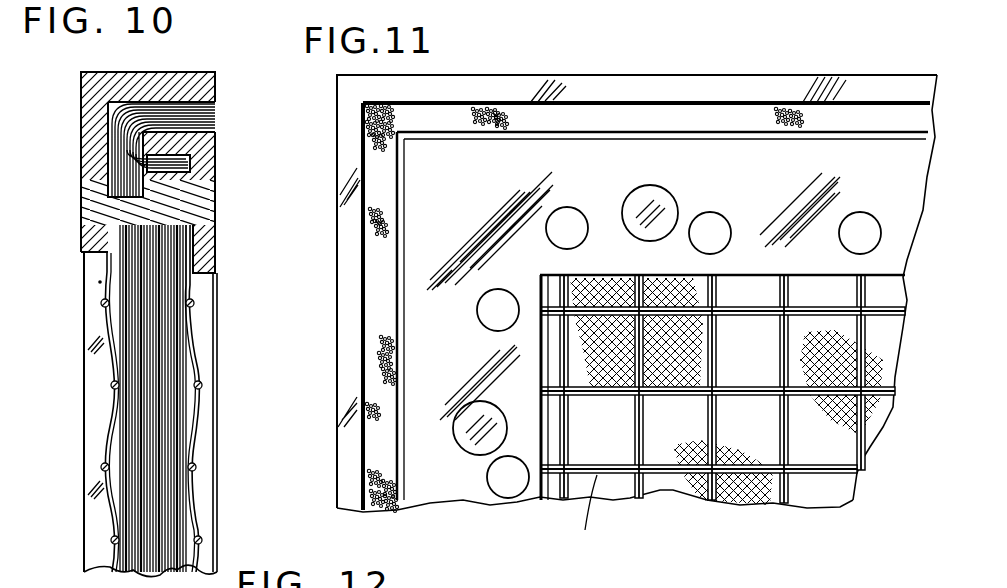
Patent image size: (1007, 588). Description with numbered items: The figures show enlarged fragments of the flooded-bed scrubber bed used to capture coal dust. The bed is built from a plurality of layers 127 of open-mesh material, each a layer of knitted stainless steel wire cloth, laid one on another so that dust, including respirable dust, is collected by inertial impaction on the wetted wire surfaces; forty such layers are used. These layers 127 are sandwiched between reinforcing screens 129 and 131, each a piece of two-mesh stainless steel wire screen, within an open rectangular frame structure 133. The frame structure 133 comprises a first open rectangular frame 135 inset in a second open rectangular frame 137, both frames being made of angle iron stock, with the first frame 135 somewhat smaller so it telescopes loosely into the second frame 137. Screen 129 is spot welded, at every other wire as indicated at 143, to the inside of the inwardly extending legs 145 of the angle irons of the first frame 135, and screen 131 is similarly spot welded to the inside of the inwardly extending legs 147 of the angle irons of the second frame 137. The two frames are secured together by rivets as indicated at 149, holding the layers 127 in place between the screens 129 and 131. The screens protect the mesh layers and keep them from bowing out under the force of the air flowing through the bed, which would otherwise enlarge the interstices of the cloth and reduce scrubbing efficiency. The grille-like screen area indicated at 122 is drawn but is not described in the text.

In FIG. 11, the screen grille 122 is at (755, 493).
In FIG. 10, the layers of open-mesh material 127 is at (163, 425).
In FIG. 11, the layers of open-mesh material 127 is at (363, 135).
In FIG. 10, the reinforcing screen 129 is at (203, 322).
In FIG. 10, the reinforcing screen 131 is at (105, 365).
In FIG. 10, the open rectangular frame structure 133 is at (82, 72).
In FIG. 11, the open rectangular frame structure 133 is at (337, 75).
In FIG. 10, the first open rectangular frame 135 is at (218, 487).
In FIG. 10, the second open rectangular frame 137 is at (97, 447).
In FIG. 11, the spot welds 143 is at (556, 208).
In FIG. 10, the inwardly extending legs 145 is at (208, 298).
In FIG. 11, the inwardly extending legs 145 is at (752, 262).
In FIG. 10, the inwardly extending legs 147 is at (100, 282).
In FIG. 10, the rivets 149 is at (217, 213).
In FIG. 11, the rivets 149 is at (647, 185).